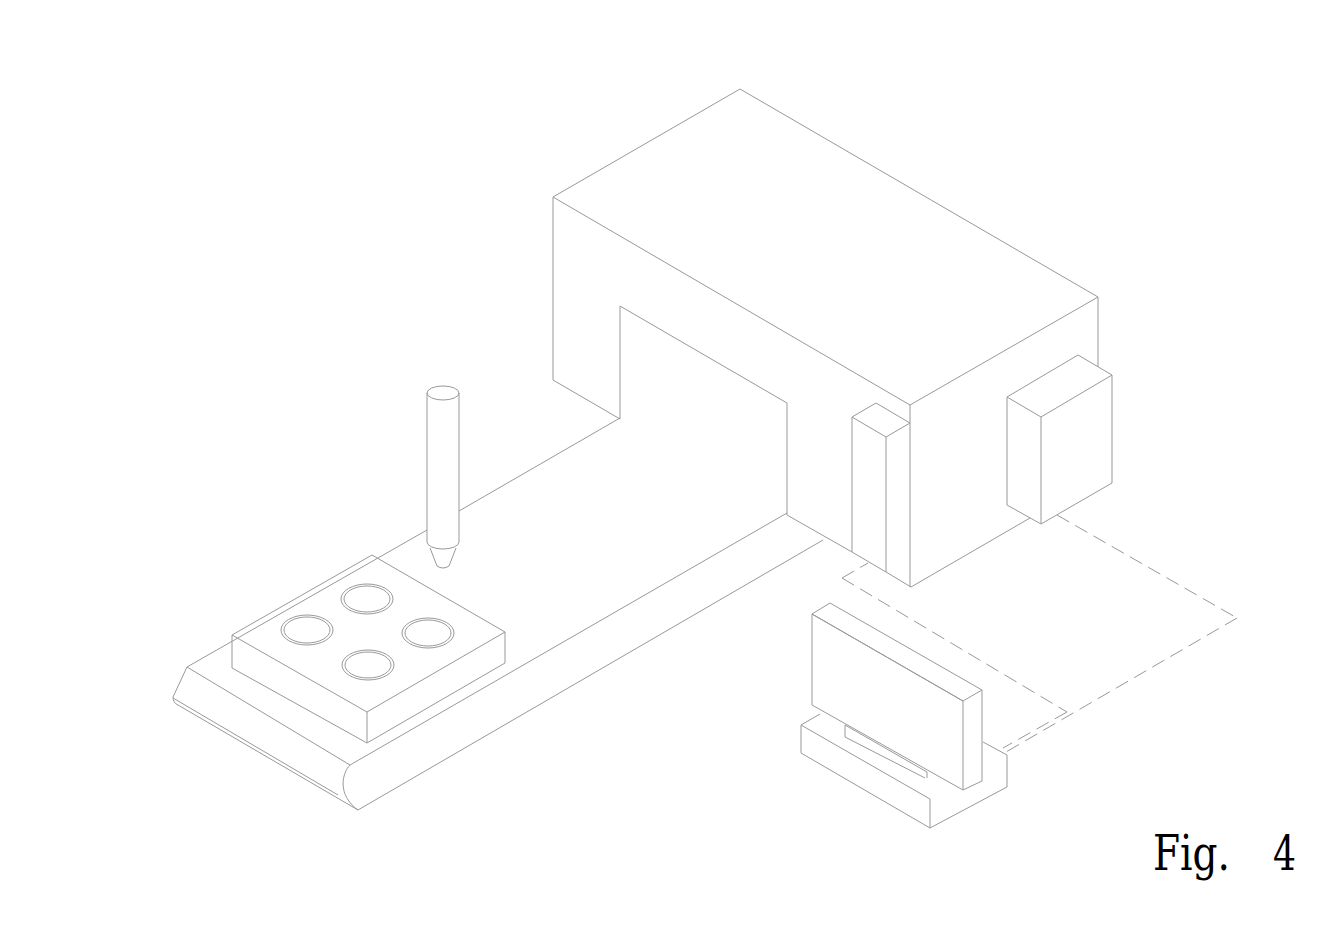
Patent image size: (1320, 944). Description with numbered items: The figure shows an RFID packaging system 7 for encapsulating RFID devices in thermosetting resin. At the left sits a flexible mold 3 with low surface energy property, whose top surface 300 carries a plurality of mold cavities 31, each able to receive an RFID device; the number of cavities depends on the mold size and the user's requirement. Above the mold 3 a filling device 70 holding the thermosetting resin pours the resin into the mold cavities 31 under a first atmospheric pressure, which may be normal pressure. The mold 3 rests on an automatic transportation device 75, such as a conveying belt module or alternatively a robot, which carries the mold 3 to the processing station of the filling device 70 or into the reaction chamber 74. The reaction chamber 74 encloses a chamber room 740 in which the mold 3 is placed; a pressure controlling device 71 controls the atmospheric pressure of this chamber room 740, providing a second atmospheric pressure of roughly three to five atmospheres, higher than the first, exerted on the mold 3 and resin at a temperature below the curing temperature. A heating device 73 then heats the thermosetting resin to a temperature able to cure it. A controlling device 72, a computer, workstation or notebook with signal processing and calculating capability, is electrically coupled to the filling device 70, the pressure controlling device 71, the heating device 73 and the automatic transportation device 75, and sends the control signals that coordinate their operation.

The packaging system 7 is at (370, 96).
The reaction chamber 74 is at (650, 147).
The chamber room 740 is at (678, 364).
The heating device 73 is at (872, 413).
The pressure controlling device 71 is at (1098, 423).
The controlling device 72 is at (775, 765).
The automatic transportation device 75 is at (527, 714).
The flexible mold 3 is at (258, 588).
The top surface 300 is at (468, 617).
The mold cavity 31 is at (348, 585).
The filling device 70 is at (438, 386).